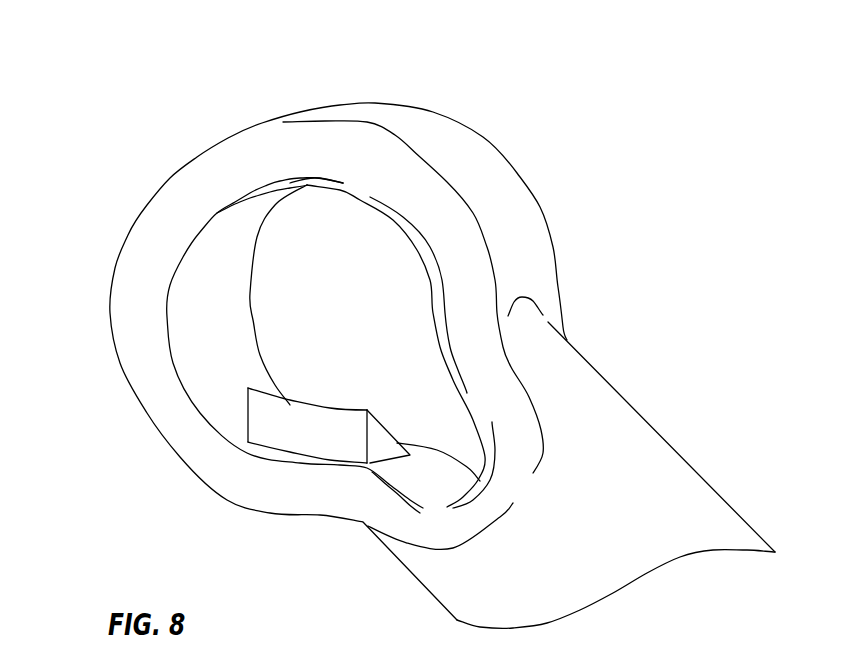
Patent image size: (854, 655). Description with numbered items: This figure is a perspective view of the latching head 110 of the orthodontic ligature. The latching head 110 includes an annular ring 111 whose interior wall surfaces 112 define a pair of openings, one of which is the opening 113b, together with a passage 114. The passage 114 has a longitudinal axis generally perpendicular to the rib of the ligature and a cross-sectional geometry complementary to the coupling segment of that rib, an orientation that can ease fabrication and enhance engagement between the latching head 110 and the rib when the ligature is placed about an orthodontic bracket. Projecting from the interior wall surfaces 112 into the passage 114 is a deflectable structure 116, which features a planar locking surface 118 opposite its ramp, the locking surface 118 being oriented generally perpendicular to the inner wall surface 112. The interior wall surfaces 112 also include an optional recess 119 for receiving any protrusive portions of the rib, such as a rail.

The latching head 110 is at (200, 173).
The annular ring 111 is at (468, 294).
The interior wall surfaces 112 is at (208, 385).
The opening 113b is at (295, 187).
The passage 114 is at (283, 295).
The deflectable structure 116 is at (380, 440).
The planar locking surface 118 is at (302, 432).
The recess 119 is at (450, 474).